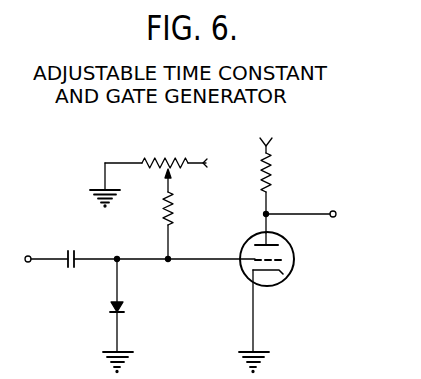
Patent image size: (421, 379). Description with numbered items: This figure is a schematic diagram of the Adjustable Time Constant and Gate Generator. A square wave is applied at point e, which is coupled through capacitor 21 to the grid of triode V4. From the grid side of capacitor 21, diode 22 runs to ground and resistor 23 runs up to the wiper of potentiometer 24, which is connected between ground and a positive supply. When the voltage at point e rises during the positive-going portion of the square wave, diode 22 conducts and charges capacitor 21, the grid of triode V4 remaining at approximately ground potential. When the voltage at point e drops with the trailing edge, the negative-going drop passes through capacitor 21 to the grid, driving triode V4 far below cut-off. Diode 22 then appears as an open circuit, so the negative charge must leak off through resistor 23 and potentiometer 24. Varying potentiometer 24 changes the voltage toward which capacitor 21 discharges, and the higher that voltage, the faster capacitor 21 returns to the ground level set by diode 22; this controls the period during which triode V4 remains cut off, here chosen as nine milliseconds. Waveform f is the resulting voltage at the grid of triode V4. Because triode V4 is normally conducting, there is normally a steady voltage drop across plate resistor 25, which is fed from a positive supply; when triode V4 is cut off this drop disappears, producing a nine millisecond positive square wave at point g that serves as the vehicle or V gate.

The point e is at (47, 258).
The capacitor 21 is at (78, 257).
The diode 22 is at (126, 307).
The resistor 23 is at (171, 221).
The potentiometer 24 is at (155, 161).
The plate resistor 25 is at (271, 186).
The waveform f is at (221, 259).
The point g is at (306, 214).
The triode V4 is at (291, 247).